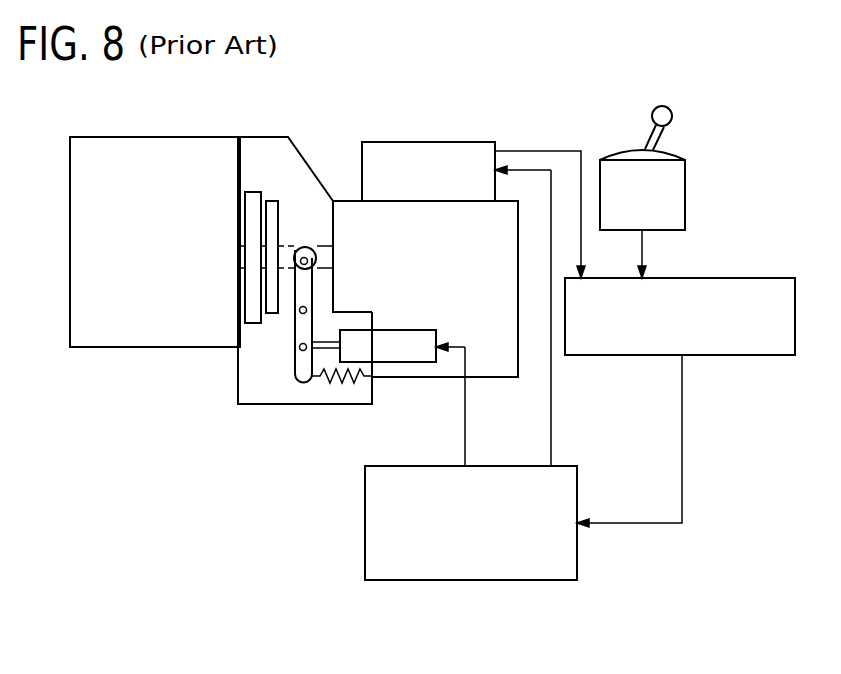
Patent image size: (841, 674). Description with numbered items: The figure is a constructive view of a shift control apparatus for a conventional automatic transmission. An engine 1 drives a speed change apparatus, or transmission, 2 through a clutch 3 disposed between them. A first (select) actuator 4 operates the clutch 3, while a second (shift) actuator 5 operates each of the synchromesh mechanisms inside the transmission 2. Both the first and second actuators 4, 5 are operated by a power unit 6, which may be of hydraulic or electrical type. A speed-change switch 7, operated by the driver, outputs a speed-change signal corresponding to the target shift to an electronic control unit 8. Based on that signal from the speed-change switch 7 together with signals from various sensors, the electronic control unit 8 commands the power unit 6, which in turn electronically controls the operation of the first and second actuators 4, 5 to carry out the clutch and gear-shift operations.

The engine 1 is at (148, 153).
The speed change apparatus 2 is at (343, 208).
The clutch 3 is at (267, 152).
The first actuator 4 is at (398, 348).
The second actuator 5 is at (430, 152).
The power unit 6 is at (407, 466).
The speed-change switch 7 is at (620, 152).
The electronic control unit 8 is at (690, 280).